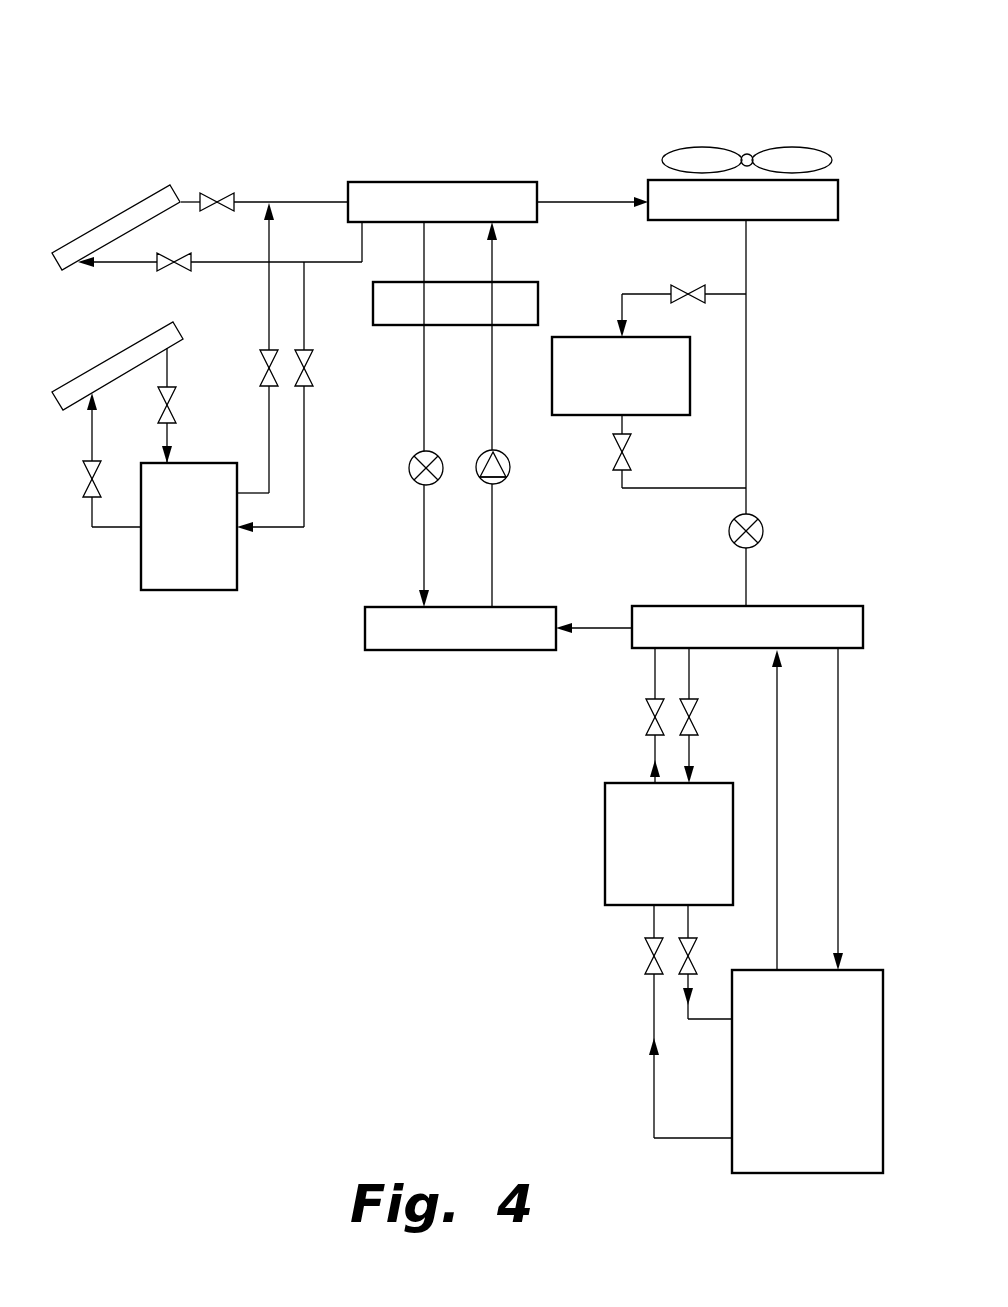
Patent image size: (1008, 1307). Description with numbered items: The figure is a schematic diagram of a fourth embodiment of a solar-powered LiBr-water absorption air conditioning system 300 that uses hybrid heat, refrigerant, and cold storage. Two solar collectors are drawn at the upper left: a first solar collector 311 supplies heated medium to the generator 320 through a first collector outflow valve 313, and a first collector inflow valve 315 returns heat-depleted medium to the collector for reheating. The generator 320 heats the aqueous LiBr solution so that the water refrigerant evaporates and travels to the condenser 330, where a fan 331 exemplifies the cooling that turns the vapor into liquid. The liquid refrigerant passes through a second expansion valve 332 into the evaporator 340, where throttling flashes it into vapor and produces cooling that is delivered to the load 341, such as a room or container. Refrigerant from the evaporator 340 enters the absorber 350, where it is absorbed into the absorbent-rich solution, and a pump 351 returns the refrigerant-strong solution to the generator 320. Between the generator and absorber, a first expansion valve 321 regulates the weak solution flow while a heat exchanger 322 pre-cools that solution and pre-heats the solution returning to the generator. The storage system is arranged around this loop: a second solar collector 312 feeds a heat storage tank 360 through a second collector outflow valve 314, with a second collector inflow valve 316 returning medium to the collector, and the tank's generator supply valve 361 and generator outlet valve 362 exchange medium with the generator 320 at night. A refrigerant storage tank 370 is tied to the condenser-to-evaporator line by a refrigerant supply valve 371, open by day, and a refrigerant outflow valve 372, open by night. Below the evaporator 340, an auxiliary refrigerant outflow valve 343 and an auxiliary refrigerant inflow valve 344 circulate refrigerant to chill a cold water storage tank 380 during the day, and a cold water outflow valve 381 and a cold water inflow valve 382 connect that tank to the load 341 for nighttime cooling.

The solar-powered LiBr-water absorption air conditioning system 300 is at (382, 75).
The first solar collector 311 is at (107, 221).
The second solar collector 312 is at (88, 372).
The first collector outflow valve 313 is at (211, 193).
The second collector outflow valve 314 is at (176, 405).
The first collector inflow valve 315 is at (158, 270).
The second collector inflow valve 316 is at (83, 473).
The generator 320 is at (455, 182).
The first expansion valve 321 is at (410, 466).
The heat exchanger 322 is at (394, 325).
The condenser 330 is at (811, 220).
The fan 331 is at (772, 148).
The second expansion valve 332 is at (763, 525).
The evaporator 340 is at (812, 606).
The load 341 is at (732, 1160).
The auxiliary refrigerant outflow valve 343 is at (699, 722).
The auxiliary refrigerant inflow valve 344 is at (645, 712).
The absorber 350 is at (376, 650).
The pump 351 is at (506, 482).
The heat storage tank 360 is at (178, 590).
The generator supply valve 361 is at (262, 365).
The generator outlet valve 362 is at (312, 368).
The refrigerant storage tank 370 is at (578, 337).
The refrigerant supply valve 371 is at (681, 286).
The refrigerant outflow valve 372 is at (612, 452).
The cold water storage tank 380 is at (605, 826).
The cold water outflow valve 381 is at (697, 962).
The cold water inflow valve 382 is at (645, 952).